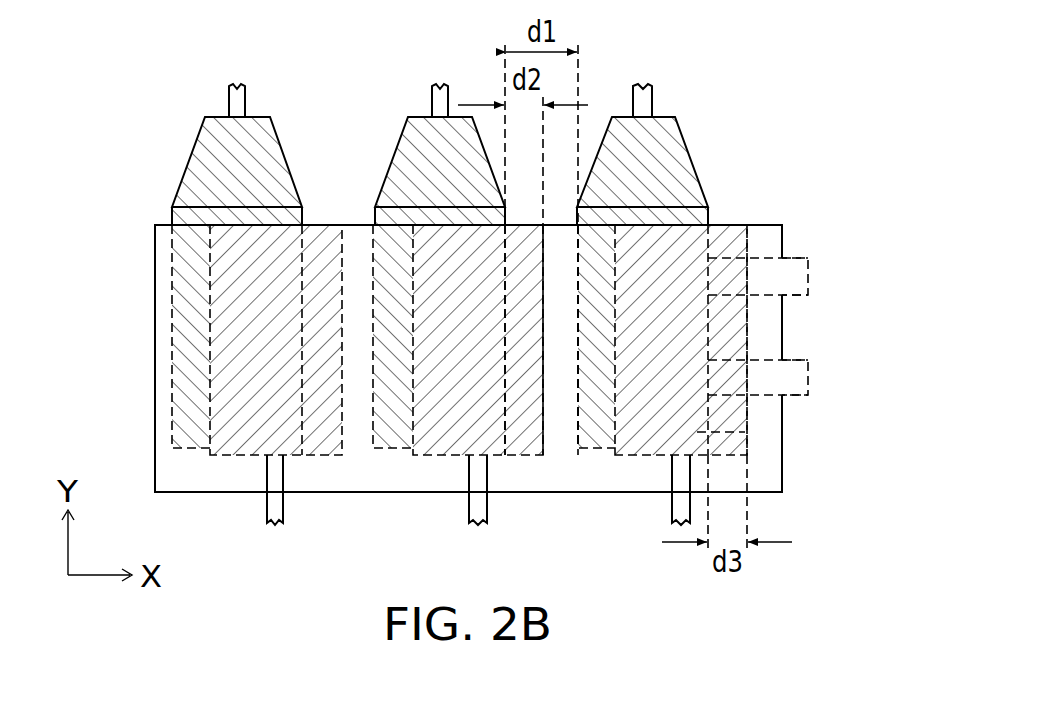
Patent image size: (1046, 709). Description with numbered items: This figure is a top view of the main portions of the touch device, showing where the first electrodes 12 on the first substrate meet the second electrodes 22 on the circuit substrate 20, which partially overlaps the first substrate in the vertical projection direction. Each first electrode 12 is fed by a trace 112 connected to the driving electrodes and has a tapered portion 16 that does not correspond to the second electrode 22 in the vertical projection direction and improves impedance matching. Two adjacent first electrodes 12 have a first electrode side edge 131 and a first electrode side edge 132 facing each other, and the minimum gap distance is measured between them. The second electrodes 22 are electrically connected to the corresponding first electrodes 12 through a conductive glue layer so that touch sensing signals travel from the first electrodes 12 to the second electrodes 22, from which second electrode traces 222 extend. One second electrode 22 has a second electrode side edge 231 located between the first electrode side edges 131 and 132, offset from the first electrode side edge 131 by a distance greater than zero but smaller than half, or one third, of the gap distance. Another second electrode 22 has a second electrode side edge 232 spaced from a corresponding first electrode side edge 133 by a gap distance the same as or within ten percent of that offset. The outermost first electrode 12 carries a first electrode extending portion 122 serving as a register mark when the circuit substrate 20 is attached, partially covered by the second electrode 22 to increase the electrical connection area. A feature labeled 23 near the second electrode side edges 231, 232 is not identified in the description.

The first electrode 12 is at (688, 217).
The tapered portion 16 is at (675, 150).
The circuit substrate 20 is at (772, 475).
The second electrode 22 is at (727, 340).
The gap 23 is at (535, 400).
The trace 112 is at (227, 105).
The first electrode extending portion 122 is at (797, 258).
The first electrode side edge 131 is at (503, 300).
The first electrode side edge 132 is at (577, 288).
The first electrode side edge 133 is at (745, 432).
The second electrode traces 222 is at (267, 512).
The second electrode side edge 231 is at (545, 358).
The second electrode side edge 232 is at (748, 404).